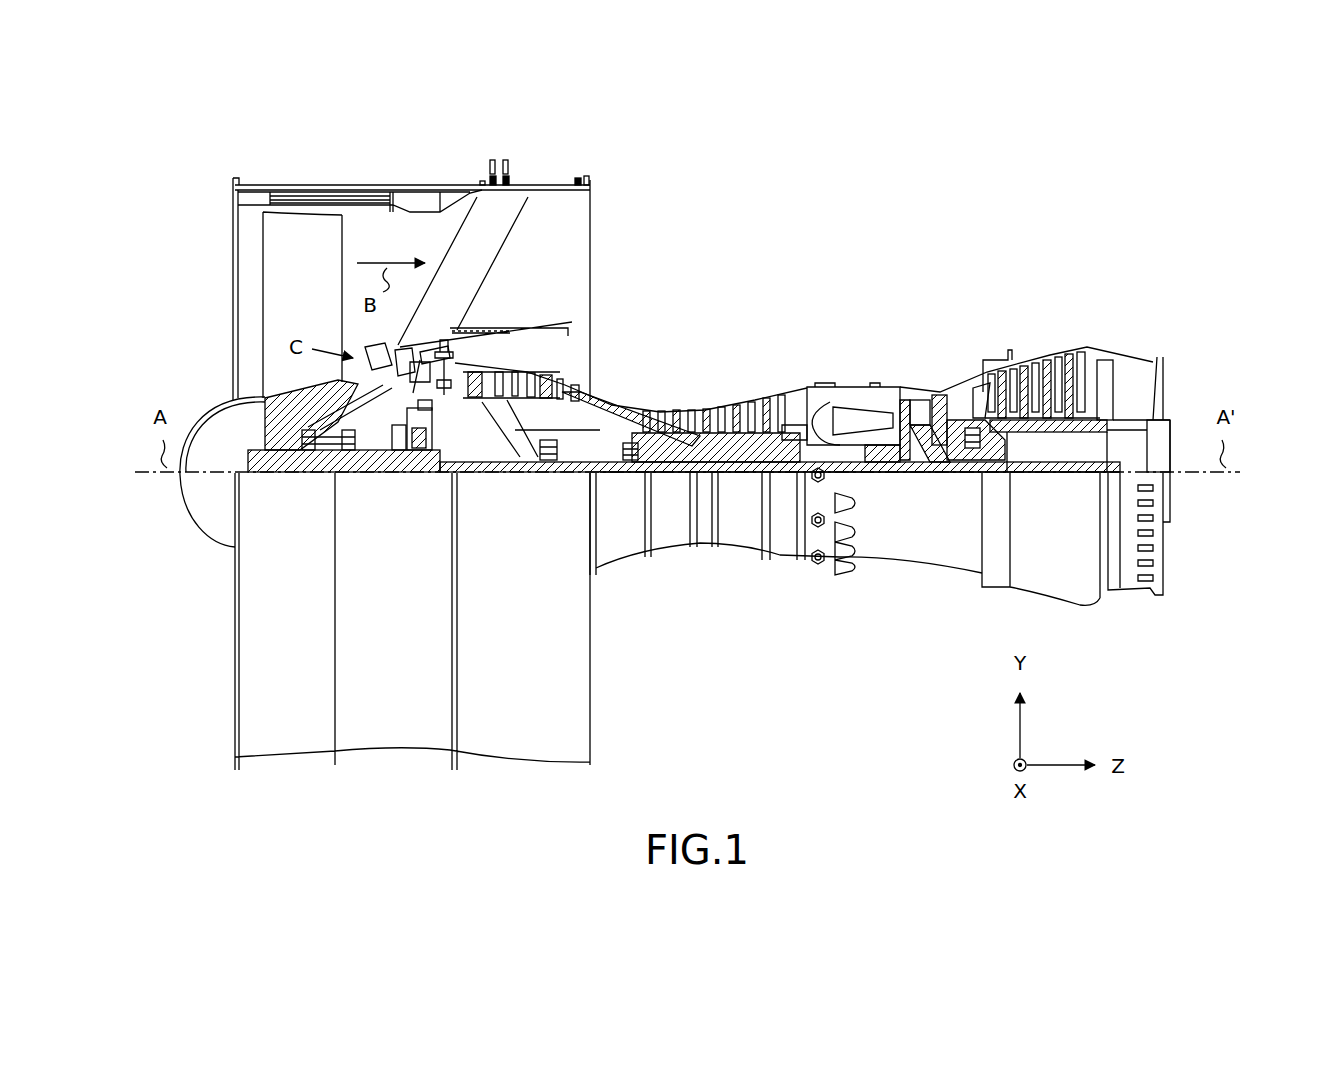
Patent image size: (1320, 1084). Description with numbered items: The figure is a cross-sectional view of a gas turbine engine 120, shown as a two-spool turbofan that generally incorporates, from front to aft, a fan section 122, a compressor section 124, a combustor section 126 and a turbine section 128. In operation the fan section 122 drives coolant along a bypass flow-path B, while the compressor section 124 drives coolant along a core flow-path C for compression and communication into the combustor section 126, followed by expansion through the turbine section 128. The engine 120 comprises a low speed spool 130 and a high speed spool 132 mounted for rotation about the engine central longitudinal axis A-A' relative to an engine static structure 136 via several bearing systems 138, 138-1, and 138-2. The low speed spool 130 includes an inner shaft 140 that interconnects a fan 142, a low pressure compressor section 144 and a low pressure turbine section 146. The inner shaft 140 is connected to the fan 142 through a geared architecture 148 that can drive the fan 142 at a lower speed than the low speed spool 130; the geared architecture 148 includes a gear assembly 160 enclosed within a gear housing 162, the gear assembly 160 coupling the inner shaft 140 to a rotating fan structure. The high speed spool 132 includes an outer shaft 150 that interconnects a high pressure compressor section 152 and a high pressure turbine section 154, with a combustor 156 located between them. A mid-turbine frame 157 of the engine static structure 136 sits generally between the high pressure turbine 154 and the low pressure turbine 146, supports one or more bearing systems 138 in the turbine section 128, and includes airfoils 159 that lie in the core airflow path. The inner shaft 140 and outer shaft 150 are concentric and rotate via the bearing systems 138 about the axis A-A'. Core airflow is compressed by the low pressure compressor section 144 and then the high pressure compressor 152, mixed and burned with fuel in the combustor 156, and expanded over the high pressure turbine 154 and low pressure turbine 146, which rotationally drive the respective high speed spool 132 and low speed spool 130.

The gas turbine engine 120 is at (918, 205).
The fan section 122 is at (235, 168).
The compressor section 124 is at (460, 290).
The combustor section 126 is at (808, 290).
The turbine section 128 is at (1105, 290).
The low speed spool 130 is at (740, 480).
The high speed spool 132 is at (792, 432).
The engine static structure 136 is at (372, 775).
The bearing system 138 is at (962, 450).
The bearing system 138-1 is at (312, 452).
The bearing system 138-2 is at (548, 462).
The inner shaft 140 is at (610, 476).
The fan 142 is at (284, 314).
The low pressure compressor section 144 is at (527, 377).
The low pressure turbine section 146 is at (1045, 368).
The geared architecture 148 is at (417, 483).
The outer shaft 150 is at (872, 452).
The high pressure compressor section 152 is at (748, 430).
The high pressure turbine section 154 is at (920, 403).
The combustor 156 is at (850, 413).
The mid-turbine frame 157 is at (950, 392).
The airfoils 159 is at (970, 423).
The gear assembly 160 is at (420, 458).
The gear housing 162 is at (422, 425).